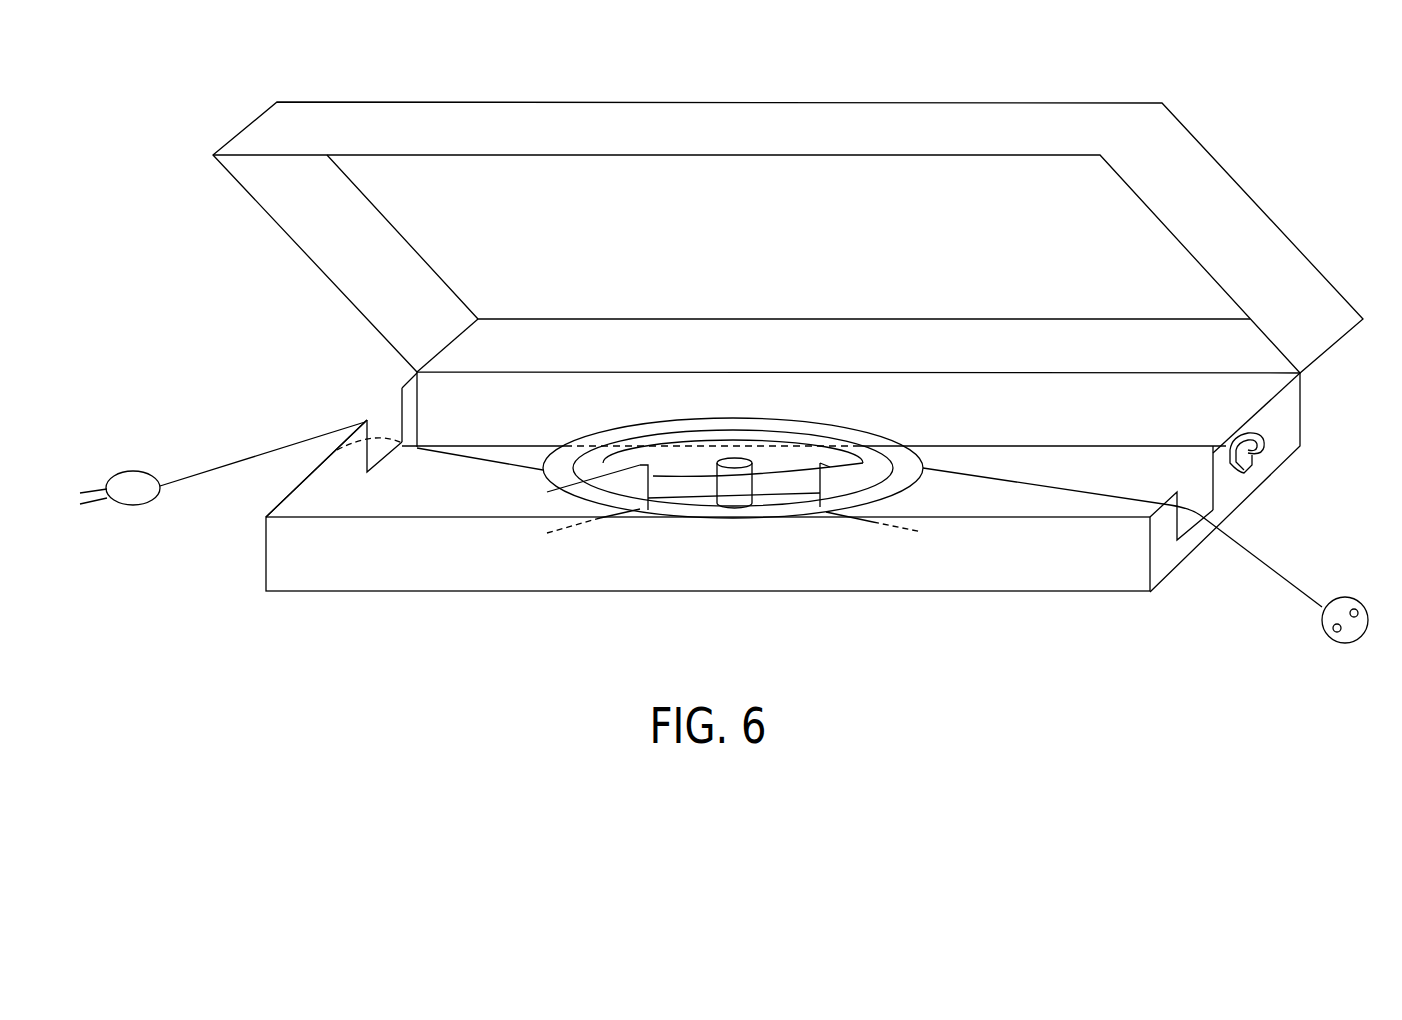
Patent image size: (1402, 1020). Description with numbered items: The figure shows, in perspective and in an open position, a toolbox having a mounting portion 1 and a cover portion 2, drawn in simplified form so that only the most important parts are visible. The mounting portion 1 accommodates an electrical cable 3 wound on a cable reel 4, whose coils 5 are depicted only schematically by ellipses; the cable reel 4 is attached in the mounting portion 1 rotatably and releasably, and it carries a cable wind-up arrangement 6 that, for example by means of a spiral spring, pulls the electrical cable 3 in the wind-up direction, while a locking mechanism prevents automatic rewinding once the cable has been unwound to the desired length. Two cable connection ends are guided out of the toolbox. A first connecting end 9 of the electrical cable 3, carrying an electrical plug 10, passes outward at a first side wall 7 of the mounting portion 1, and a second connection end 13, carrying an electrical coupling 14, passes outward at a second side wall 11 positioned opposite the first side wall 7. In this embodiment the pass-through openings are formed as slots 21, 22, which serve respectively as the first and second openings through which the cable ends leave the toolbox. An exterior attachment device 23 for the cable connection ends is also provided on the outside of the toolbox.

The mounting portion 1 is at (438, 507).
The cover portion 2 is at (1118, 223).
The electrical cable 3 is at (495, 463).
The cable reel 4 is at (545, 492).
The coils 5 is at (765, 500).
The cable wind-up arrangement 6 is at (738, 489).
The first side wall 7 is at (320, 508).
The first connecting end 9 is at (207, 477).
The electrical plug 10 is at (133, 504).
The second side wall 11 is at (1293, 403).
The second connection end 13 is at (1263, 557).
The electrical coupling 14 is at (1347, 643).
The slot 21 is at (367, 418).
The slot 22 is at (1177, 540).
The socket 23 is at (1273, 446).